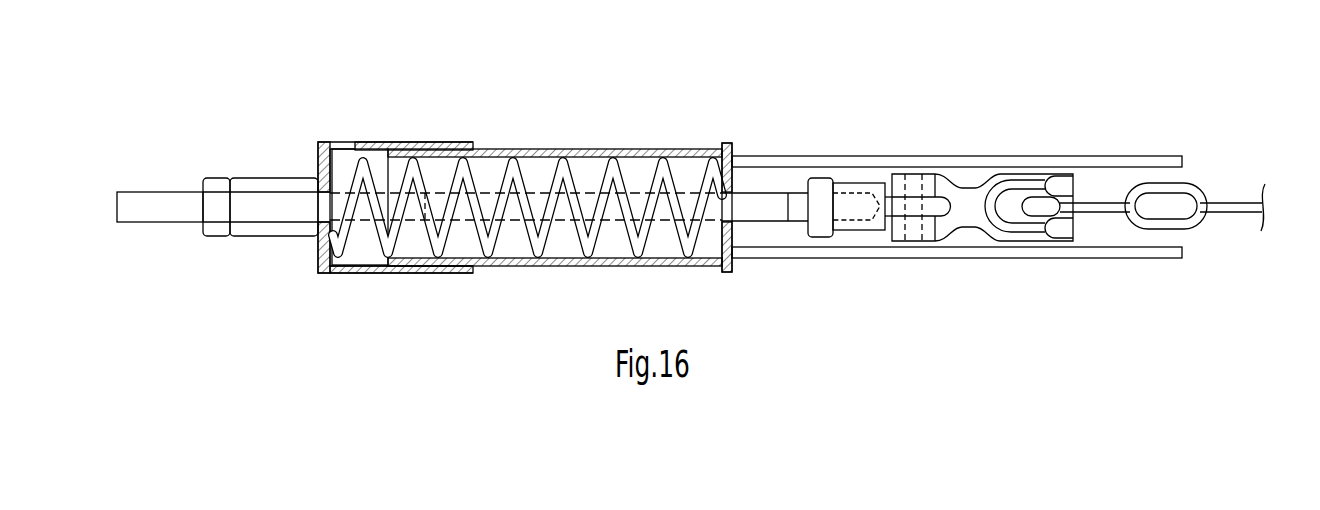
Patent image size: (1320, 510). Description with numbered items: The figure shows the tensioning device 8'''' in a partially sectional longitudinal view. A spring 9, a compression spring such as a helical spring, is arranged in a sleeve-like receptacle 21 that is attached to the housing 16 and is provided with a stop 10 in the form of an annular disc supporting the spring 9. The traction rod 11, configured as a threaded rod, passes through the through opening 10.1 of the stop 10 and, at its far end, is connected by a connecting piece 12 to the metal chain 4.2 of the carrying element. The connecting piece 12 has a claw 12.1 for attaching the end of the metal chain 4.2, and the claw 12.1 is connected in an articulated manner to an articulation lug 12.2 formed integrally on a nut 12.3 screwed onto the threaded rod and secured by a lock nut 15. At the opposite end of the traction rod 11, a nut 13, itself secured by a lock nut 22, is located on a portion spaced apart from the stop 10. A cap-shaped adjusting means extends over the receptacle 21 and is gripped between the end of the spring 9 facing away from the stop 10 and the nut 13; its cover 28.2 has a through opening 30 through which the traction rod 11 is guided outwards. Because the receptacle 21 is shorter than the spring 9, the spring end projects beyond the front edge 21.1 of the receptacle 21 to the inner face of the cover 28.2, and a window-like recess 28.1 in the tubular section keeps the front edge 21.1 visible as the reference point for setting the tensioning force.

The tensioning device 8'''' is at (651, 62).
The metal chain 4.2 is at (1200, 190).
The spring 9 is at (565, 168).
The stop 10 is at (726, 145).
The through opening 10.1 is at (737, 190).
The traction rod 11 is at (775, 222).
The connecting piece 12 is at (972, 195).
The claw 12.1 is at (1055, 228).
The articulation lug 12.2 is at (933, 208).
The nut 12.3 is at (862, 188).
The nut 13 is at (268, 180).
The lock nut 15 is at (818, 232).
The housing 16 is at (1143, 157).
The receptacle 21 is at (490, 263).
The front edge 21.1 is at (383, 143).
The lock nut 22 is at (222, 185).
The window-like recess 28.1 is at (366, 143).
The cover 28.2 is at (318, 165).
The through opening 30 is at (318, 225).